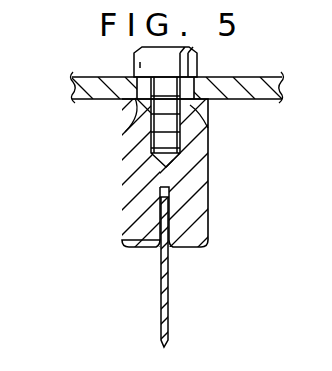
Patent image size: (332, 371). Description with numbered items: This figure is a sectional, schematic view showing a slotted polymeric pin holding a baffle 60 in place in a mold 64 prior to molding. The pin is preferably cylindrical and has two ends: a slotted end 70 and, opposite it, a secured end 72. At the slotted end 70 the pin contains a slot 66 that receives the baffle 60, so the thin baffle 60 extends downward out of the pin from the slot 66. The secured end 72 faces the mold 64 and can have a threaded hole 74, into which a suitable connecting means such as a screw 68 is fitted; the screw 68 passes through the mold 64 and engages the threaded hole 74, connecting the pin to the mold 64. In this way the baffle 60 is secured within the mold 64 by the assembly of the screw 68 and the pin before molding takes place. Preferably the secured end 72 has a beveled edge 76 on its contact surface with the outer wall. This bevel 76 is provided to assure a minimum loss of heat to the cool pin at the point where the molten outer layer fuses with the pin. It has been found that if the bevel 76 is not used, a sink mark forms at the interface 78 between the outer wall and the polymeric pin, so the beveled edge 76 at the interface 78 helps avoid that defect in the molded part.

The baffle 60 is at (161, 288).
The mold 64 is at (94, 84).
The slot 66 is at (160, 190).
The screw 68 is at (190, 69).
The slotted end 70 is at (196, 249).
The secured end 72 is at (203, 128).
The threaded hole 74 is at (192, 152).
The beveled edge 76 is at (124, 138).
The interface 78 is at (130, 100).